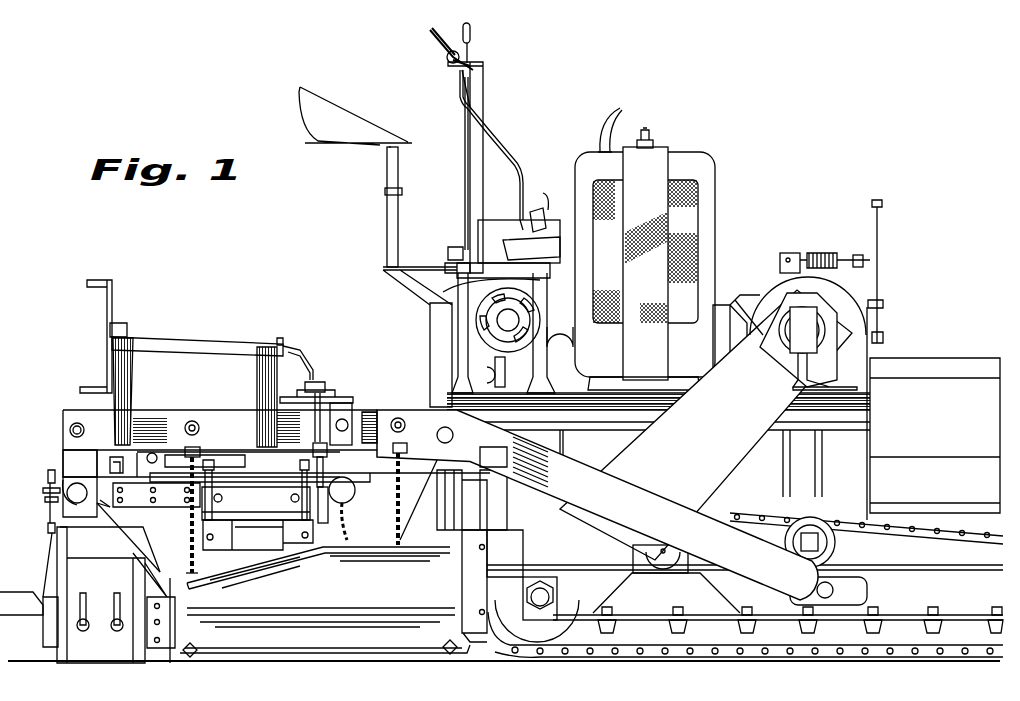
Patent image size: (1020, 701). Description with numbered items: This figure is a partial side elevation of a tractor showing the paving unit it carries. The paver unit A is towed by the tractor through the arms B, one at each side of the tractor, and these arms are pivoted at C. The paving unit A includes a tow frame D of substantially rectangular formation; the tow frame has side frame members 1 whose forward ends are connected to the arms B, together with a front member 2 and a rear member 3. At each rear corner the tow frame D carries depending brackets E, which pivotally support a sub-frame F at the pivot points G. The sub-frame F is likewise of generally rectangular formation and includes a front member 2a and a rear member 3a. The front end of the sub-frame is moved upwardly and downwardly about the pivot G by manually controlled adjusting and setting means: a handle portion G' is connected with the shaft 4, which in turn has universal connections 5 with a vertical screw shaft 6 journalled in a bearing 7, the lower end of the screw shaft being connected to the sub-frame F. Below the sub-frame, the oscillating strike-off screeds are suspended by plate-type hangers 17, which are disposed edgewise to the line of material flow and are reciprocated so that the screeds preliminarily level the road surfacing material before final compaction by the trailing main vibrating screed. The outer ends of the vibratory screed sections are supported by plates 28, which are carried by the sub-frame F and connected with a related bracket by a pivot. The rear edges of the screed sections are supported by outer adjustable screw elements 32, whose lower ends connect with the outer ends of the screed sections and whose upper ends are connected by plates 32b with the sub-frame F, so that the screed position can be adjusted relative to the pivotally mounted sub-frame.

The side frame members 1 is at (418, 412).
The front member 2 is at (68, 431).
The front member 2a is at (114, 457).
The rear member 3 is at (347, 422).
The rear member 3a is at (350, 497).
The shaft 4 is at (211, 340).
The universal connections 5 is at (307, 358).
The vertical screw shaft 6 is at (318, 438).
The bearing 7 is at (325, 388).
The plate-type hangers 17 is at (257, 547).
The plates 28 is at (148, 527).
The outer adjustable screw elements 32 is at (52, 560).
The plates 32b is at (40, 483).
The paver unit A is at (206, 381).
The arms B is at (586, 482).
The pivot C is at (835, 590).
The tow frame D is at (234, 430).
The depending brackets E is at (80, 465).
The sub-frame F is at (103, 503).
The pivot points G is at (56, 501).
The handle portion G' is at (94, 336).